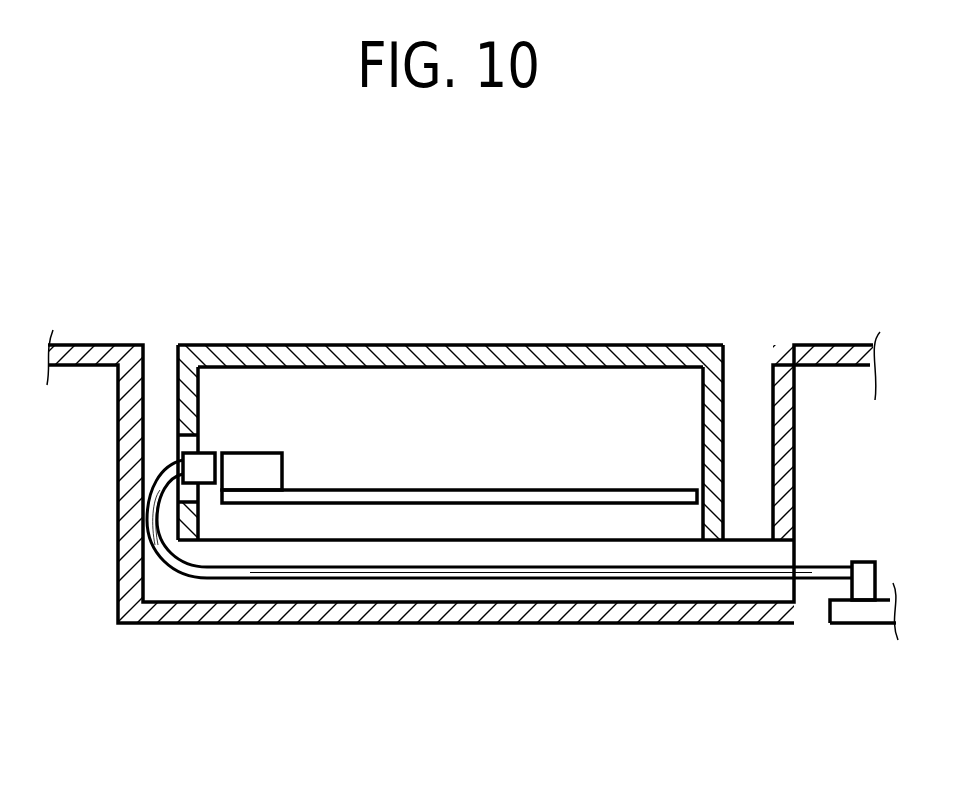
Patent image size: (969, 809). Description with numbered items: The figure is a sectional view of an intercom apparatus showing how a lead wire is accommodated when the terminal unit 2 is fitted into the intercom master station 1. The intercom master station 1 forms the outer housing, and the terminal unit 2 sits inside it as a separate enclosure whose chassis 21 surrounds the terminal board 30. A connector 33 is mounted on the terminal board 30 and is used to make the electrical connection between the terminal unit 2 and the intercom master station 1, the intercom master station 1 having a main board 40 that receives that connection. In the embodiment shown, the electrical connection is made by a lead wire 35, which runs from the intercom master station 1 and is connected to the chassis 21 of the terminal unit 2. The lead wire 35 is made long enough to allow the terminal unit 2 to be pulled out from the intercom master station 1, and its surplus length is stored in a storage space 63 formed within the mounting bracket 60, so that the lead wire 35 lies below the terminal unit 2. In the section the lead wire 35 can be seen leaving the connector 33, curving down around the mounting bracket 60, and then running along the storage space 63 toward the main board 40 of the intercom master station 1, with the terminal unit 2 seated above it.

The intercom master station 1 is at (119, 341).
The terminal unit 2 is at (486, 375).
The chassis 21 is at (389, 314).
The terminal board 30 is at (405, 497).
The connector 33 is at (265, 463).
The lead wire 35 is at (548, 573).
The main board 40 is at (862, 612).
The mounting bracket 60 is at (237, 553).
The storage space 63 is at (403, 588).